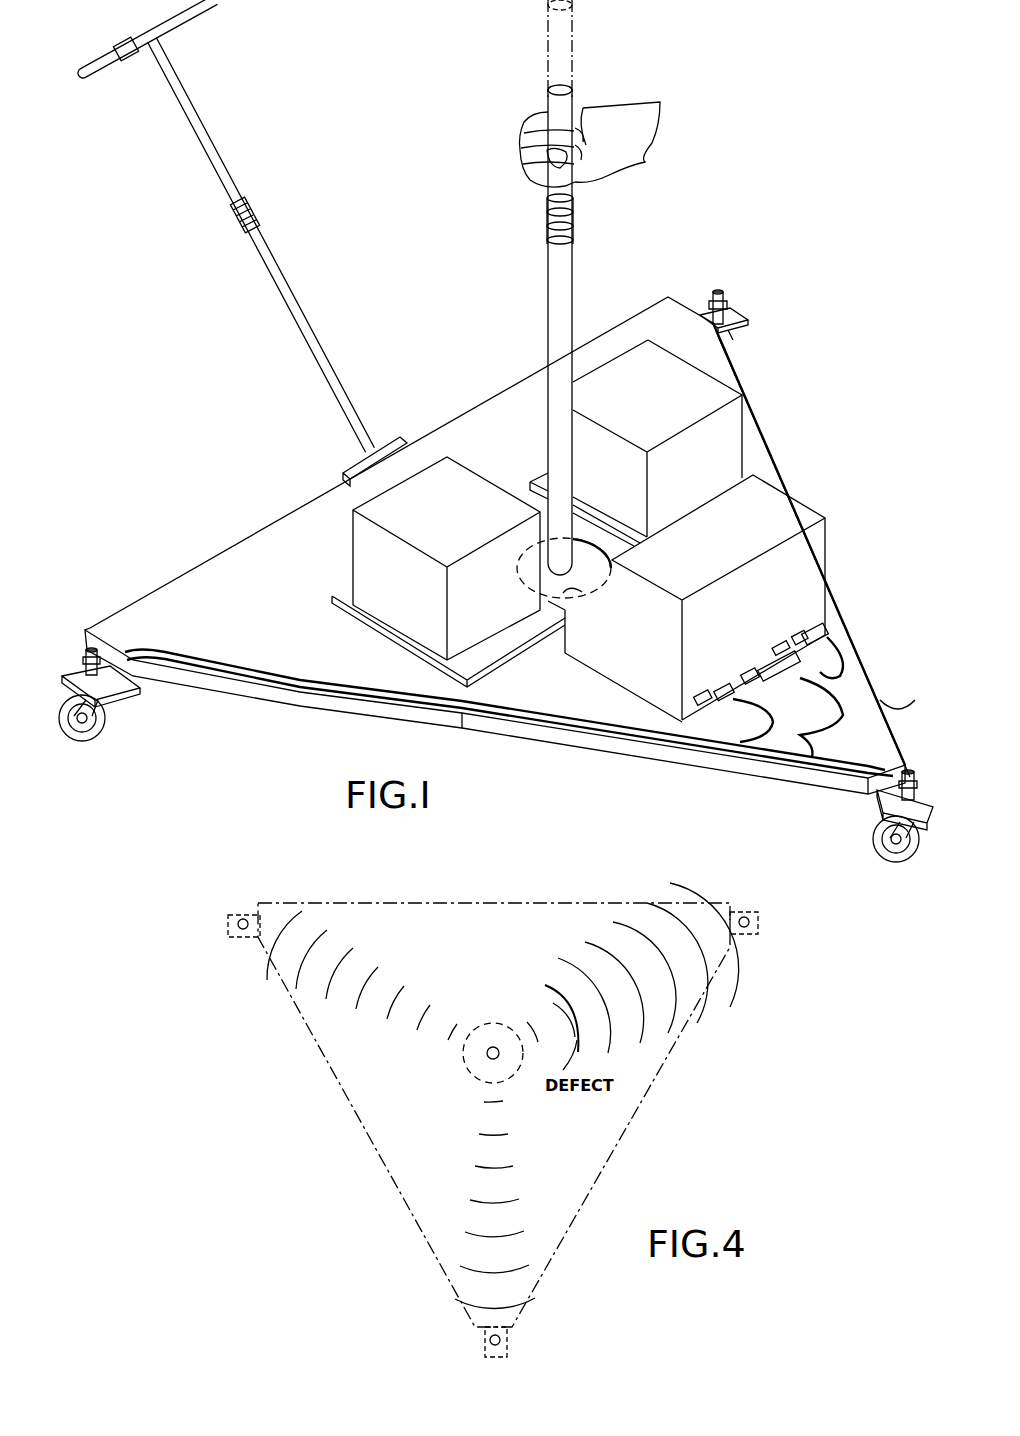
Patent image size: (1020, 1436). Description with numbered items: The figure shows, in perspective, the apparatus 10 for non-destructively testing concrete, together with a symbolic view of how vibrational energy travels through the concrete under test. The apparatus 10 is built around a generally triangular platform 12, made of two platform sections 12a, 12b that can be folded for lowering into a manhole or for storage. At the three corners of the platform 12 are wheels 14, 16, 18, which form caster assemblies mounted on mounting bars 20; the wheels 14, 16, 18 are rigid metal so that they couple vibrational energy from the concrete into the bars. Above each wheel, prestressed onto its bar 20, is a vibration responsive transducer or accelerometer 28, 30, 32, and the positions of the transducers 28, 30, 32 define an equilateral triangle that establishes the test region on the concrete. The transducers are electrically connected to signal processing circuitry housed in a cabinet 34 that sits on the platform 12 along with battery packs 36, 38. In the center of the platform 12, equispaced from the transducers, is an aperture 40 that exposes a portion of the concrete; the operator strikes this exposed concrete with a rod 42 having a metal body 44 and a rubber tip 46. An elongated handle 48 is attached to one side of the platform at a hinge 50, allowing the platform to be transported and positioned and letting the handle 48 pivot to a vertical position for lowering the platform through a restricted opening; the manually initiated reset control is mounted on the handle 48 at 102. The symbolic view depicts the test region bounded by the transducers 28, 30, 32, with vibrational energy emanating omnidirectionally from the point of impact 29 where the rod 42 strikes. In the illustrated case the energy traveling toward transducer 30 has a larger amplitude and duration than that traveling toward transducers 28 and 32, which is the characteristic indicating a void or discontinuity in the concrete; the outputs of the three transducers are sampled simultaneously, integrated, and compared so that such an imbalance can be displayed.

In FIG. 1, the apparatus 10 is at (735, 238).
In FIG. 1, the platform 12 is at (212, 577).
In FIG. 1, the platform section 12a is at (337, 670).
In FIG. 1, the platform section 12b is at (588, 708).
In FIG. 1, the wheel 14 is at (83, 737).
In FIG. 1, the wheel 16 is at (730, 334).
In FIG. 1, the wheel 18 is at (892, 853).
In FIG. 1, the mounting bar 20 is at (112, 682).
In FIG. 1, the transducer 28 is at (82, 670).
In FIG. 4, the transducer 28 is at (245, 918).
In FIG. 4, the point of impact 29 is at (490, 1060).
In FIG. 1, the transducer 30 is at (718, 287).
In FIG. 4, the transducer 30 is at (748, 922).
In FIG. 1, the transducer 32 is at (907, 770).
In FIG. 4, the transducer 32 is at (500, 1345).
In FIG. 1, the cabinet 34 is at (807, 552).
In FIG. 1, the battery pack 36 is at (468, 490).
In FIG. 1, the battery pack 38 is at (618, 370).
In FIG. 1, the aperture 40 is at (565, 592).
In FIG. 1, the rod 42 is at (575, 290).
In FIG. 1, the metal body 44 is at (552, 262).
In FIG. 1, the rubber tip 46 is at (558, 623).
In FIG. 1, the handle 48 is at (297, 302).
In FIG. 1, the hinge 50 is at (388, 438).
In FIG. 1, the reset control mounting location 102 is at (130, 37).